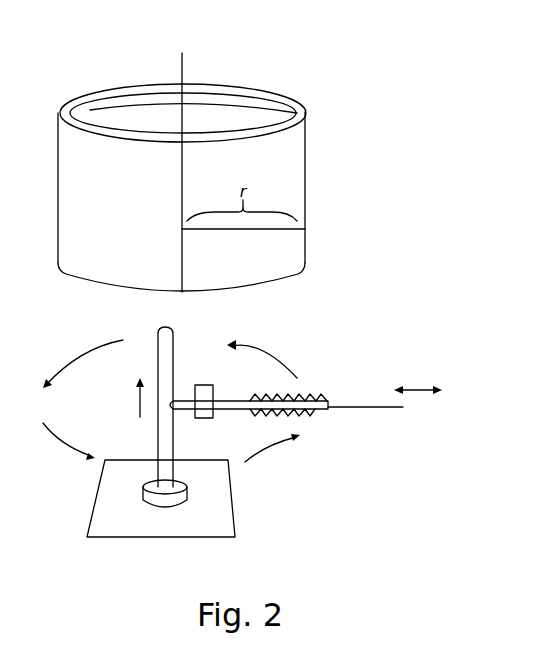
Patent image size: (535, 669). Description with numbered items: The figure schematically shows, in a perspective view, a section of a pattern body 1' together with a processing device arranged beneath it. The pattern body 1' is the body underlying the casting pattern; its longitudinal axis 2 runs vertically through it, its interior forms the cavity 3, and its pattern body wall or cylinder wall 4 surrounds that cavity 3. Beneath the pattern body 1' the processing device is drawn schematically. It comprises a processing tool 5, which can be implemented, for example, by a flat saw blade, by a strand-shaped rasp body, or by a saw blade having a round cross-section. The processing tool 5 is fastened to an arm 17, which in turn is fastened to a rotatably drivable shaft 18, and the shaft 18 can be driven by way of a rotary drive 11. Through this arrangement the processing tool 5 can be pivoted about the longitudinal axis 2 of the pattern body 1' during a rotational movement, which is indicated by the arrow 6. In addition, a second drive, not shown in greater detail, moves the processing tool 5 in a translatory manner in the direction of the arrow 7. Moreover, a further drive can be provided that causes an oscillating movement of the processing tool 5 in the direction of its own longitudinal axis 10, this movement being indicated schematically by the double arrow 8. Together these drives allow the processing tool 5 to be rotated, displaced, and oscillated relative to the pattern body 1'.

The pattern body 1' is at (223, 201).
The longitudinal axis 2 is at (187, 65).
The cavity 3 is at (248, 117).
The pattern body wall 4 is at (99, 92).
The processing tool 5 is at (313, 417).
The arrow 6 is at (273, 357).
The arrow 7 is at (138, 392).
The double arrow 8 is at (425, 390).
The longitudinal axis of the processing tool 10 is at (363, 407).
The rotary drive 11 is at (143, 489).
The arm 17 is at (212, 419).
The shaft 18 is at (176, 354).